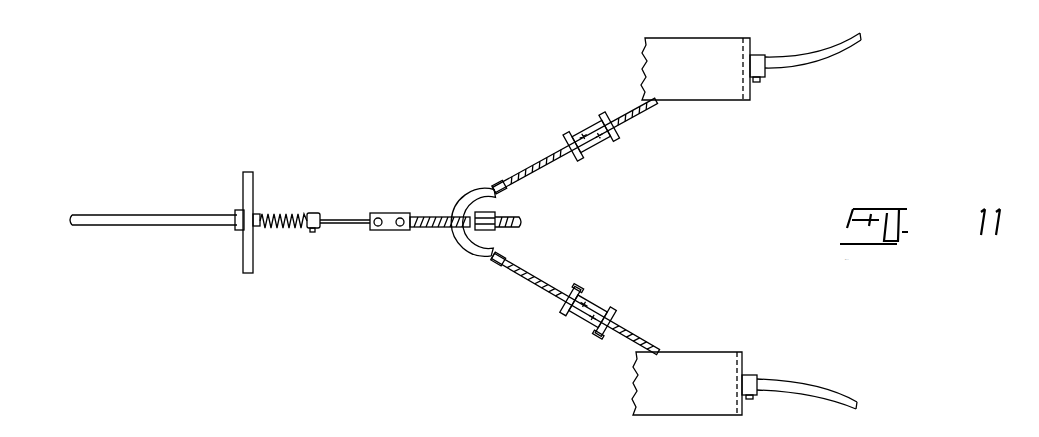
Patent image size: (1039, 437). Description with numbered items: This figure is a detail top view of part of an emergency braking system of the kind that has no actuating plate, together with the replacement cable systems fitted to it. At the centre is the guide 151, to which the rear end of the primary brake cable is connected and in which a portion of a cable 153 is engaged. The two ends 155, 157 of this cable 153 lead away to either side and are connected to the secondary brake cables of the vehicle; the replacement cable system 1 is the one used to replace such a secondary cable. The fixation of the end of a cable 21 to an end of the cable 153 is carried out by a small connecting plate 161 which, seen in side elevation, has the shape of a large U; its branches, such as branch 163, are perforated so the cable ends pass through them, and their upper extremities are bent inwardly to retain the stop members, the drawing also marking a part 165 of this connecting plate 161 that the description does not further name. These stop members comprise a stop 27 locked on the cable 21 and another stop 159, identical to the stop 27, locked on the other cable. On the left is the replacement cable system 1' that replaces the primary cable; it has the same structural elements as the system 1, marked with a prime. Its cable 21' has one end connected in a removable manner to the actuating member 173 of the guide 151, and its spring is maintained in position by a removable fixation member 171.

The replacement cable system 1 is at (807, 376).
The replacement cable system 1' is at (165, 226).
The cable 21 is at (652, 334).
The cable 21' is at (283, 250).
The stop 27 is at (594, 341).
The guide 151 is at (496, 248).
The cable 153 is at (513, 171).
The end of cable 155 is at (566, 146).
The end of cable 157 is at (553, 294).
The stop 159 is at (572, 321).
The connecting plate 161 is at (598, 302).
The branch 163 is at (613, 318).
The clamp bolt 165 is at (573, 292).
The removable fixation member 171 is at (318, 230).
The actuating member 173 is at (437, 229).